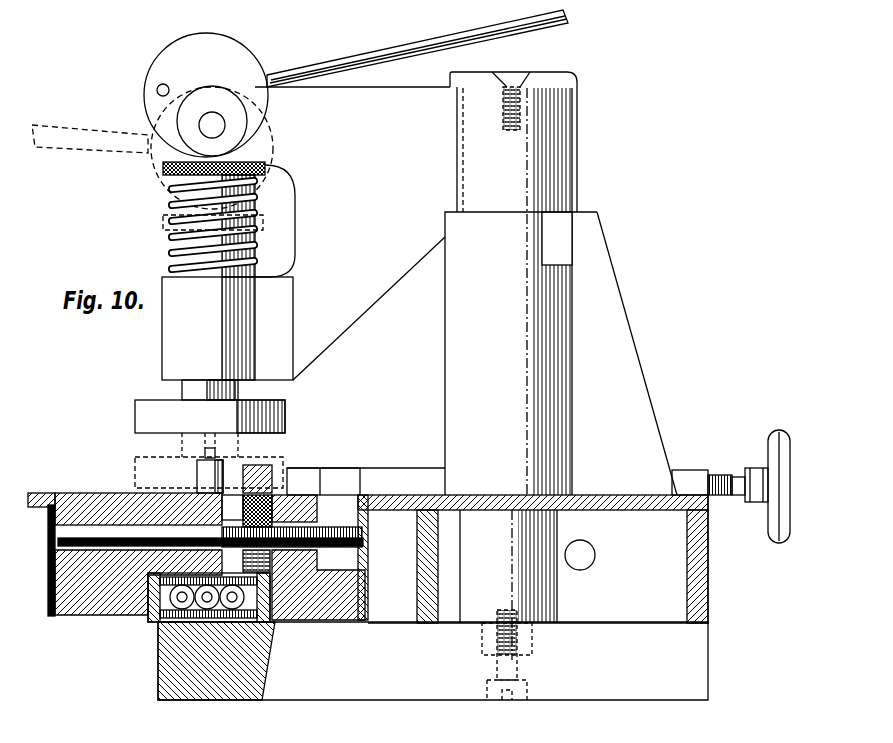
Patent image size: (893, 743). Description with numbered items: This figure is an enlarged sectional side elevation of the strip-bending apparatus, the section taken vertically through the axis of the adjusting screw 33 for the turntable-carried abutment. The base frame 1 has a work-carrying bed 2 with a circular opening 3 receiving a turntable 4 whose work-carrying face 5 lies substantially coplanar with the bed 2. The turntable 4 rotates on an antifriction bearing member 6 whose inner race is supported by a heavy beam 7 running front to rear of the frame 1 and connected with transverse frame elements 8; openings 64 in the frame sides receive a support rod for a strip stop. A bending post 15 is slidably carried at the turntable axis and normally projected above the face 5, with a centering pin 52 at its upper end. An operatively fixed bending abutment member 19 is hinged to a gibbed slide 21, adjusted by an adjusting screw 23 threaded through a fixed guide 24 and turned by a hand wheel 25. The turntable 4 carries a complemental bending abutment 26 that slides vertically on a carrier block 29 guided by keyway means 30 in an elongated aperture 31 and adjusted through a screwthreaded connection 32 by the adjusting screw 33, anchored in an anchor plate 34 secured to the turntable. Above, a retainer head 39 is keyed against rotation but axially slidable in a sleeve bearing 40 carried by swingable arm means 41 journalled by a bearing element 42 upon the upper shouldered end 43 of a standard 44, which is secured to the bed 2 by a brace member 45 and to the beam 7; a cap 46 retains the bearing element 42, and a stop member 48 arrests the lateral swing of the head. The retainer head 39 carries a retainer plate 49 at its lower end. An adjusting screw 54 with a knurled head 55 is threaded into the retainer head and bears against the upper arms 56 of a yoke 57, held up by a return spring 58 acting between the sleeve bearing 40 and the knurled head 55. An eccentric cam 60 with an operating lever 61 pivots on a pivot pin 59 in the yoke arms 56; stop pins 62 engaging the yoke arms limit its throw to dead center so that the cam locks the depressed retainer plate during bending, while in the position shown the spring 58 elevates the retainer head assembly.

The base frame 1 is at (676, 548).
The work-carrying bed 2 is at (43, 492).
The circular opening 3 is at (48, 517).
The turntable 4 is at (65, 616).
The work-carrying face 5 is at (67, 495).
The antifriction bearing member 6 is at (150, 620).
The beam 7 is at (160, 668).
The transverse frame elements 8 is at (417, 600).
The bending post 15 is at (197, 477).
The bending abutment member 19 is at (295, 468).
The gibbed slide 21 is at (372, 468).
The adjusting screw 23 is at (722, 477).
The fixed guide 24 is at (686, 468).
The hand wheel 25 is at (770, 437).
The bending abutment 26 is at (272, 478).
The carrier block 29 is at (300, 494).
The keyway means 30 is at (332, 512).
The elongated aperture 31 is at (362, 575).
The screwthreaded connection 32 is at (295, 558).
The adjusting screw 33 is at (50, 558).
The anchor plate 34 is at (367, 497).
The retainer head 39 is at (178, 263).
The sleeve bearing 40 is at (162, 345).
The swingable arm means 41 is at (350, 320).
The bearing element 42 is at (578, 160).
The upper shouldered end 43 is at (463, 165).
The standard 44 is at (447, 401).
The brace member 45 is at (648, 380).
The cap 46 is at (547, 76).
The stop member 48 is at (543, 247).
The retainer plate 49 is at (135, 420).
The centering pin 52 is at (205, 452).
The adjusting screw 54 is at (250, 195).
The knurled head 55 is at (165, 170).
The upper arms 56 is at (214, 86).
The yoke 57 is at (295, 238).
The return spring 58 is at (178, 244).
The pivot pin 59 is at (225, 125).
The eccentric cam 60 is at (172, 55).
The operating lever 61 is at (108, 134).
The stop pins 62 is at (157, 90).
The openings 64 is at (595, 555).